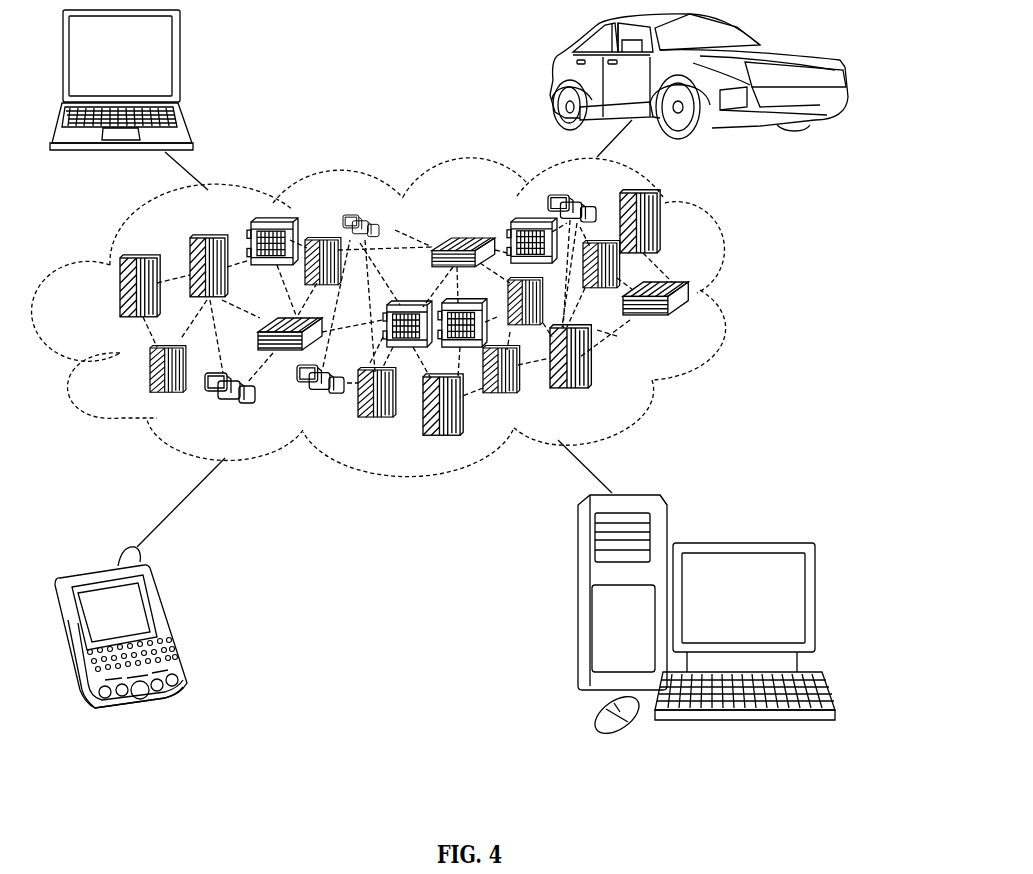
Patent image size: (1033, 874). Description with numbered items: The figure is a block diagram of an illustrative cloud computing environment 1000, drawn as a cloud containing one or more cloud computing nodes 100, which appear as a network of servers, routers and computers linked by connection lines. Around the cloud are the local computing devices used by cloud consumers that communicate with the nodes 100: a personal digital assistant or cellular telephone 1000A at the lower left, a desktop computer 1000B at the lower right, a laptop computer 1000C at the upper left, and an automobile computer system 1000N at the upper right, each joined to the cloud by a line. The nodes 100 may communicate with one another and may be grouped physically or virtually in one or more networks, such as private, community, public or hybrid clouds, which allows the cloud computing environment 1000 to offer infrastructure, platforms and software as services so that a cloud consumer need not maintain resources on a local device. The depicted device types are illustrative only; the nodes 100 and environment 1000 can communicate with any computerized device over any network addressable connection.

The cloud computing environment 1000 is at (740, 297).
The cloud computing nodes 100 is at (693, 322).
The personal digital assistant (PDA) or cellular telephone 1000A is at (172, 622).
The desktop computer 1000B is at (752, 523).
The laptop computer 1000C is at (180, 62).
The automobile computer system 1000N is at (558, 78).